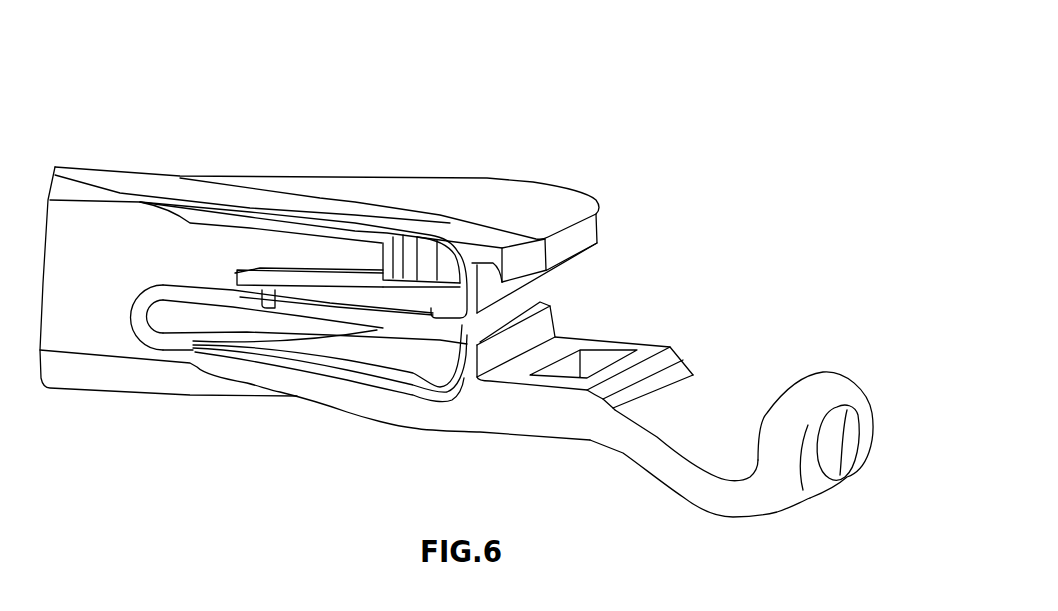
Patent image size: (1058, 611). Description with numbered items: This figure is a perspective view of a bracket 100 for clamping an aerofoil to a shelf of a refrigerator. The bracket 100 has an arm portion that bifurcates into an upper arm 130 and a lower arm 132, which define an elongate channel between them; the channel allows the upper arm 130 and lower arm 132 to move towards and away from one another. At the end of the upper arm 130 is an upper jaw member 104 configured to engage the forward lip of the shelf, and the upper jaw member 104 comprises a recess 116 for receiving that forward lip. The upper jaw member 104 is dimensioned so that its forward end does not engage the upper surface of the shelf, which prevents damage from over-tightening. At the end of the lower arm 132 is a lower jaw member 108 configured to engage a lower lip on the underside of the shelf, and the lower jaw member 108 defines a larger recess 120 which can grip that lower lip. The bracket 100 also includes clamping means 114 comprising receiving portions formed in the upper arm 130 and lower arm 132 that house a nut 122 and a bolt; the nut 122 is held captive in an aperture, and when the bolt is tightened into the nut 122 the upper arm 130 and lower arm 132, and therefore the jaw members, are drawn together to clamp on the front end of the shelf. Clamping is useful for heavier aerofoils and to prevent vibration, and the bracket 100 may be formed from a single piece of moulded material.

The bracket 100 is at (665, 207).
The upper jaw member 104 is at (588, 200).
The lower jaw member 108 is at (832, 385).
The clamping means 114 is at (540, 148).
The recess 116 is at (483, 273).
The recess 120 is at (713, 418).
The nut 122 is at (428, 257).
The upper arm 130 is at (295, 207).
The lower arm 132 is at (247, 358).